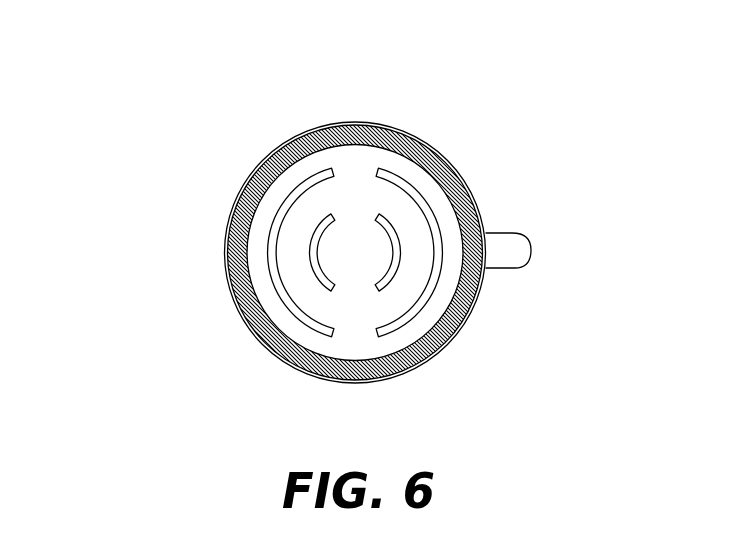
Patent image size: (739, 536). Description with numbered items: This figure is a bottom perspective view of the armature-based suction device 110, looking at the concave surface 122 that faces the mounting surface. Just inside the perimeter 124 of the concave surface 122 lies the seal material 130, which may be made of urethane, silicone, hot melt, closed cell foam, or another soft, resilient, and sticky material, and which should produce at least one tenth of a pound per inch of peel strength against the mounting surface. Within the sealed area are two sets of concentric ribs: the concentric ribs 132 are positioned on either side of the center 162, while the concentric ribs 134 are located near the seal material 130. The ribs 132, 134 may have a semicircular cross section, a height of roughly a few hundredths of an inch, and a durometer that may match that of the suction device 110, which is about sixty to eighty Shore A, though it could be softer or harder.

The armature-based suction device 110 is at (335, 227).
The concave surface 122 is at (349, 341).
The perimeter 124 is at (217, 218).
The seal material 130 is at (464, 329).
The concentric ribs 132 is at (334, 195).
The concentric ribs 134 is at (427, 182).
The center 162 is at (354, 236).